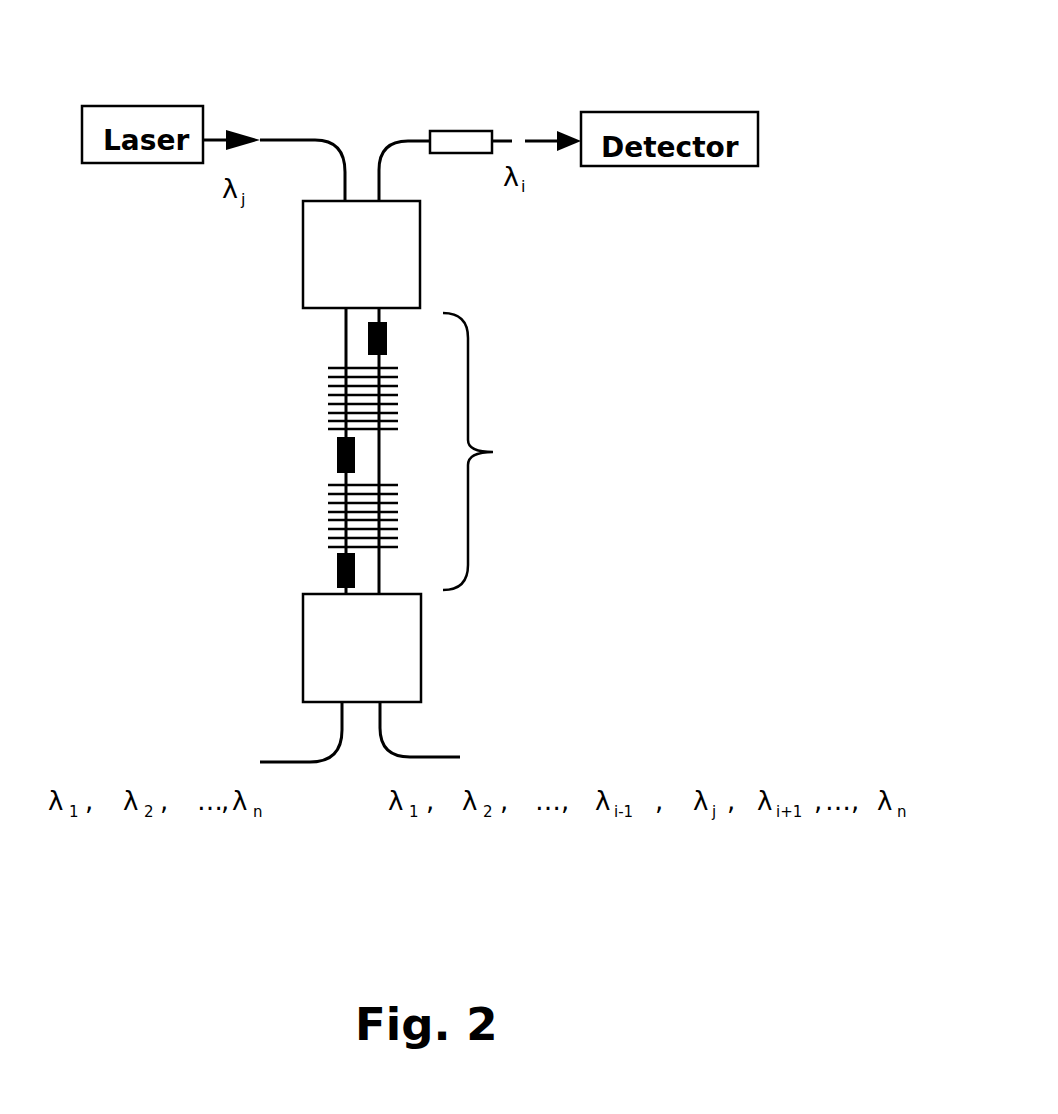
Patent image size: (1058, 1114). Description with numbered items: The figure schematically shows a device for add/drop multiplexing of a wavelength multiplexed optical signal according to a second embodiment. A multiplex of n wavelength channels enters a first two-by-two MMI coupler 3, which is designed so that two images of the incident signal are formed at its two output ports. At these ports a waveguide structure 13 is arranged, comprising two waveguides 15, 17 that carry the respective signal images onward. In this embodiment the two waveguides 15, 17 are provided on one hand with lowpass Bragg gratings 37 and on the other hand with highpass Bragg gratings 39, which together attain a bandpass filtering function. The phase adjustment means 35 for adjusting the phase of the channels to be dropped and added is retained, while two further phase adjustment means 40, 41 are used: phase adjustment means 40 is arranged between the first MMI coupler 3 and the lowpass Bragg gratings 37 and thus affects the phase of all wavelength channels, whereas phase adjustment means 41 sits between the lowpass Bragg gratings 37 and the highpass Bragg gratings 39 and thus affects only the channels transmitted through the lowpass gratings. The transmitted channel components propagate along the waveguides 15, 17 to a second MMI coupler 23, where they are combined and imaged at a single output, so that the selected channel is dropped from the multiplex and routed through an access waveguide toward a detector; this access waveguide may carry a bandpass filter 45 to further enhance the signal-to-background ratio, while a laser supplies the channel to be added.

The first MMI coupler 3 is at (421, 625).
The waveguide structure 13 is at (492, 451).
The waveguide 15 is at (368, 333).
The waveguide 17 is at (398, 318).
The second MMI coupler 23 is at (420, 228).
The phase adjustment means 35 is at (345, 322).
The lowpass Bragg gratings 37 is at (330, 528).
The highpass Bragg gratings 39 is at (330, 390).
The phase adjustment means 40 is at (335, 572).
The phase adjustment means 41 is at (337, 460).
The bandpass filter 45 is at (455, 131).